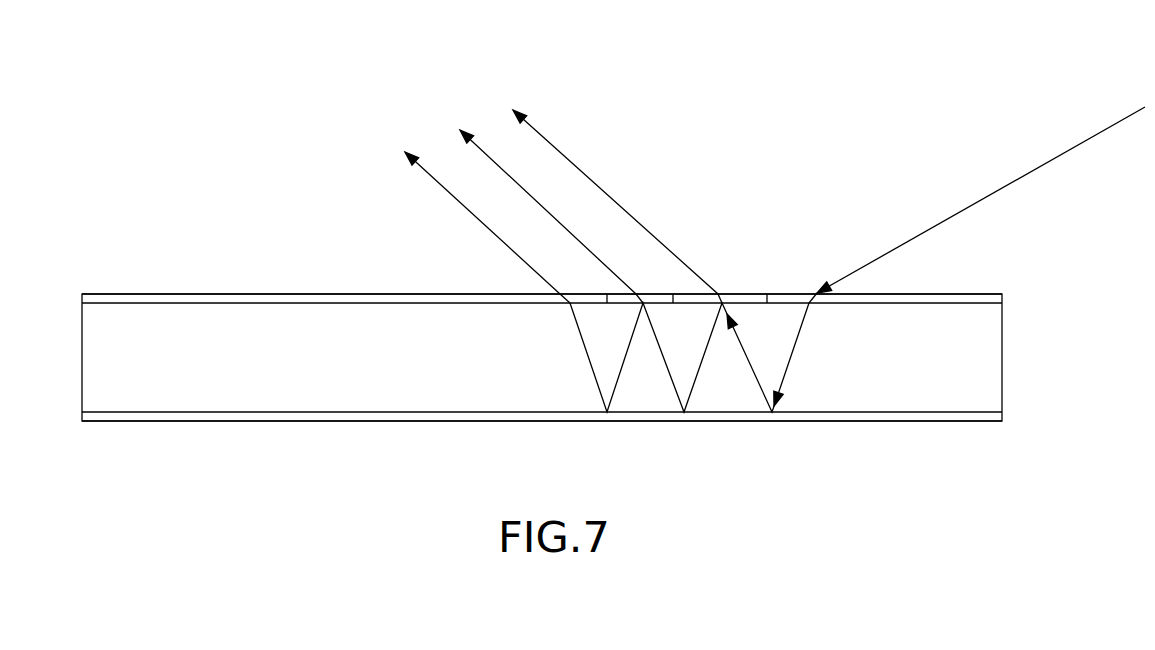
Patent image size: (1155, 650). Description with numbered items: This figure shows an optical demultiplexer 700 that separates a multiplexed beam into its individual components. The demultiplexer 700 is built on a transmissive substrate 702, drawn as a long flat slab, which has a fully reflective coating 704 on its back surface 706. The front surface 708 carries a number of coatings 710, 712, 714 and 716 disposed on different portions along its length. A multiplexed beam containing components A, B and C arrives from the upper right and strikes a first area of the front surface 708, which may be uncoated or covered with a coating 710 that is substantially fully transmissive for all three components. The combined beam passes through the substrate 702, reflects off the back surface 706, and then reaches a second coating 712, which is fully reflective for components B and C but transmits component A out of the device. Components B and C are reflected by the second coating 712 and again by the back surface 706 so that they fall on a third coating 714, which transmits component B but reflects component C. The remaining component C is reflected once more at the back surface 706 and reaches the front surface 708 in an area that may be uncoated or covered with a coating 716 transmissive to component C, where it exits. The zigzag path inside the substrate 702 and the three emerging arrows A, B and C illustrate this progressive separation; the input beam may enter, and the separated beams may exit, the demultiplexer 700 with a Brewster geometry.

The demultiplexer 700 is at (803, 130).
The transmissive substrate 702 is at (988, 367).
The fully reflective coating 704 is at (925, 421).
The back surface 706 is at (880, 411).
The front surface 708 is at (866, 303).
The first coating 710 is at (775, 293).
The second coating 712 is at (722, 293).
The third coating 714 is at (640, 293).
The fourth coating 716 is at (472, 283).